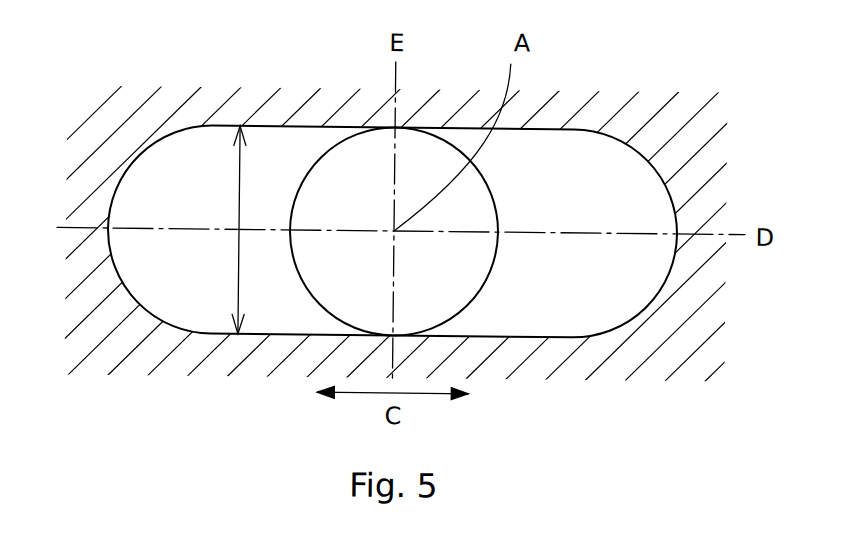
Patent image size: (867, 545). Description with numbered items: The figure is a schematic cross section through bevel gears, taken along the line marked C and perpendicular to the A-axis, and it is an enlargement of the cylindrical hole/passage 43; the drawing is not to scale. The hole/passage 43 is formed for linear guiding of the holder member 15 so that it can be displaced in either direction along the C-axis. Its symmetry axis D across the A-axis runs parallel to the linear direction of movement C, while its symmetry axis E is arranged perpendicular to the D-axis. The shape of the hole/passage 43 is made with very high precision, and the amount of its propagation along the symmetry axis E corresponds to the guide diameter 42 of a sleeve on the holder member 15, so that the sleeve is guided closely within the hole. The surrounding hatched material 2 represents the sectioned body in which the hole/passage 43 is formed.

The housing body 2 is at (180, 364).
The holder member 15 is at (416, 162).
The guide diameter 42 is at (255, 230).
The cylindrical hole/passage 43 is at (607, 200).